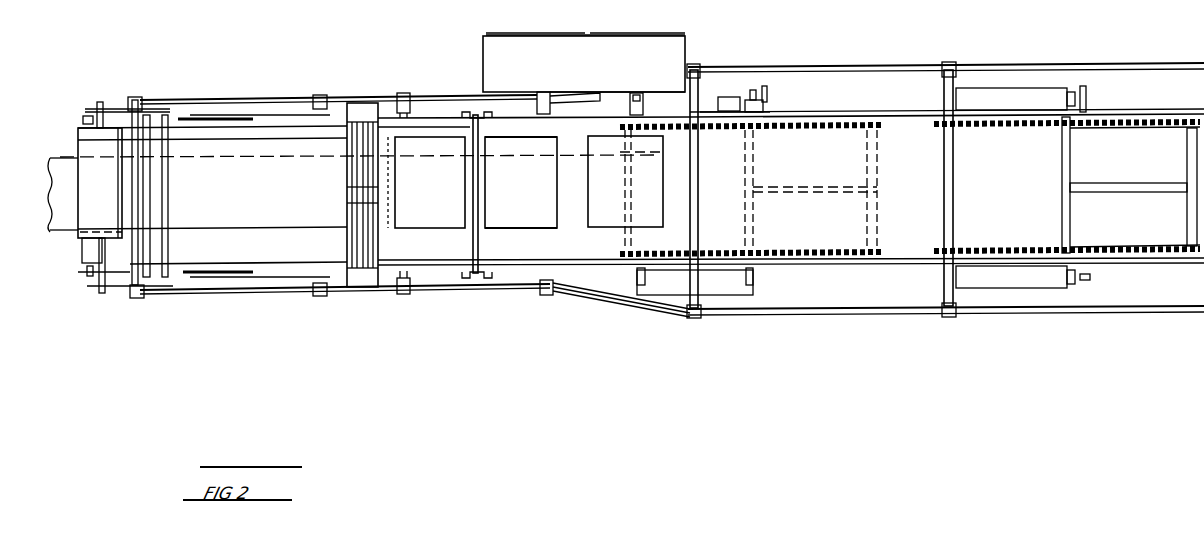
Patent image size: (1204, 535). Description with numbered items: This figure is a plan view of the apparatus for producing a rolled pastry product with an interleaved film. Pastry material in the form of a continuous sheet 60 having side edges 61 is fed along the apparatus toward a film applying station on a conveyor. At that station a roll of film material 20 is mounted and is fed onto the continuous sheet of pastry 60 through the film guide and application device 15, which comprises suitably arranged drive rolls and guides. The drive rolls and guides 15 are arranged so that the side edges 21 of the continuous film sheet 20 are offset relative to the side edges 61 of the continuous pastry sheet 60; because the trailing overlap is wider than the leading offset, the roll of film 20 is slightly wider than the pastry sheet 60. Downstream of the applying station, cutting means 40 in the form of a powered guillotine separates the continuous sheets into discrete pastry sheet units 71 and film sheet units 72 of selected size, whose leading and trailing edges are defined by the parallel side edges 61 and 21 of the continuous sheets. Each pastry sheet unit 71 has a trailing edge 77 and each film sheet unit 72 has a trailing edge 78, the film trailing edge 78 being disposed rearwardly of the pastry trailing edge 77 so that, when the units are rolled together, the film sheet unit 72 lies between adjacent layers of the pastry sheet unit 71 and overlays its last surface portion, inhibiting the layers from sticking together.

The film guide and application device 15 is at (126, 86).
The roll of film material 20 is at (73, 128).
The side edges of continuous film sheet 21 is at (253, 138).
The cutting means 40 is at (363, 108).
The continuous sheet of pastry material 60 is at (62, 220).
The side edges of pastry sheet 61 is at (63, 160).
The pastry sheet unit 71 is at (478, 220).
The film sheet unit 72 is at (557, 225).
The trailing edge of pastry sheet unit 77 is at (530, 228).
The trailing edge of film sheet unit 78 is at (547, 137).